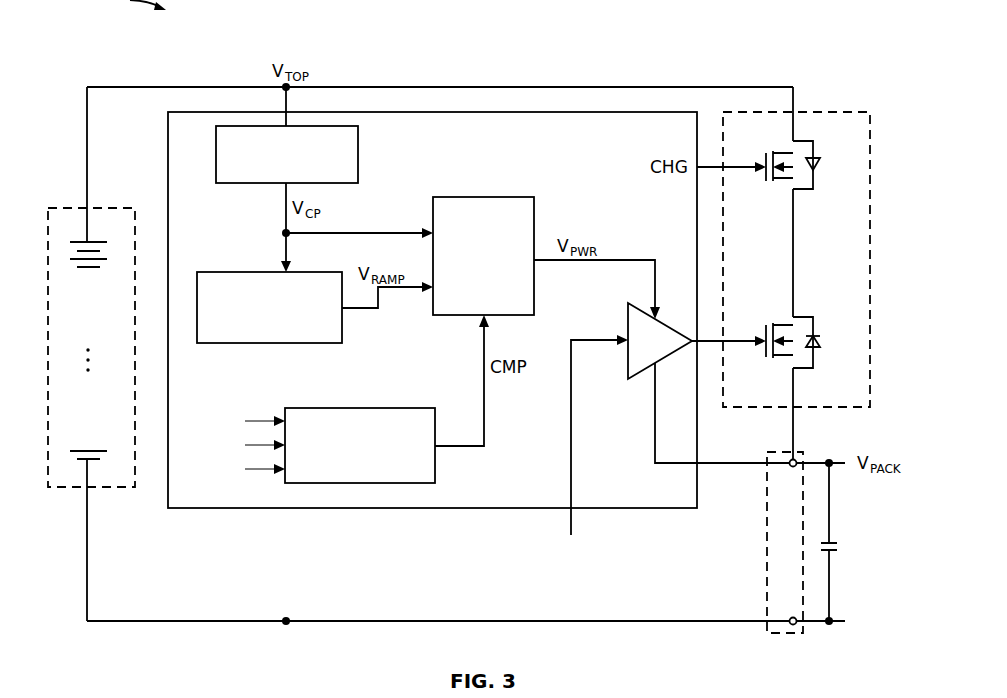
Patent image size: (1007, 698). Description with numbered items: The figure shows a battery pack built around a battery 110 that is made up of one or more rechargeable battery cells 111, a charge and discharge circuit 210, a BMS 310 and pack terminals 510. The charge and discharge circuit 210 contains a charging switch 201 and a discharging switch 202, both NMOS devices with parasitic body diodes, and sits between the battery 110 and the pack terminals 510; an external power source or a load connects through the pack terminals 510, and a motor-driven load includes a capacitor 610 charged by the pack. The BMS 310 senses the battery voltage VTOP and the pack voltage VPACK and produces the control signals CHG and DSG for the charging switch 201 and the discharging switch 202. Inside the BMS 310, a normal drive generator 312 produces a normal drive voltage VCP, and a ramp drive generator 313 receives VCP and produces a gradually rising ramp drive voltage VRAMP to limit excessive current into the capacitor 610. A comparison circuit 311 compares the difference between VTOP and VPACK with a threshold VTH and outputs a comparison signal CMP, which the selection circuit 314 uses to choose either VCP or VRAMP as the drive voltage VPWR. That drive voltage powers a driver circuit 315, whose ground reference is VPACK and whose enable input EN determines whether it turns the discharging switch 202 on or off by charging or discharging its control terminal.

The battery 110 is at (51, 208).
The battery cell 111 is at (97, 241).
The BMS 310 is at (402, 508).
The comparison circuit 311 is at (340, 408).
The normal drive generator 312 is at (240, 183).
The ramp drive generator 313 is at (262, 343).
The selection circuit 314 is at (467, 196).
The driver circuit 315 is at (628, 313).
The charge and discharge circuit 210 is at (824, 112).
The charging switch 201 is at (783, 190).
The discharging switch 202 is at (782, 364).
The pack terminals 510 is at (775, 452).
The capacitor 610 is at (844, 549).